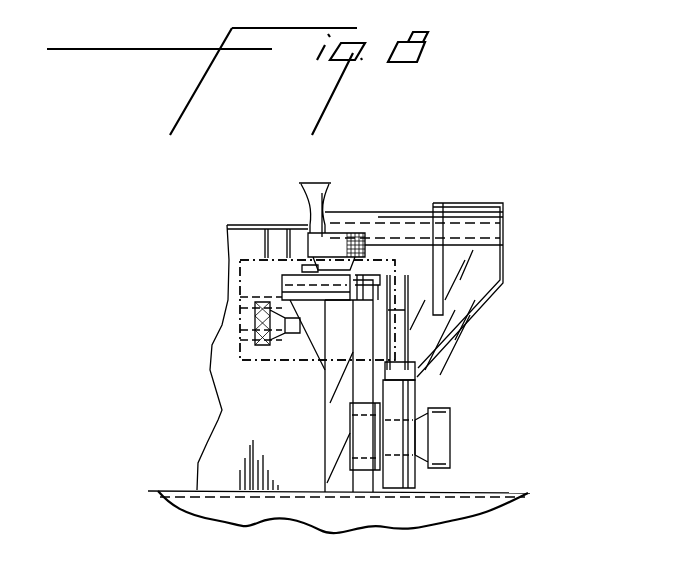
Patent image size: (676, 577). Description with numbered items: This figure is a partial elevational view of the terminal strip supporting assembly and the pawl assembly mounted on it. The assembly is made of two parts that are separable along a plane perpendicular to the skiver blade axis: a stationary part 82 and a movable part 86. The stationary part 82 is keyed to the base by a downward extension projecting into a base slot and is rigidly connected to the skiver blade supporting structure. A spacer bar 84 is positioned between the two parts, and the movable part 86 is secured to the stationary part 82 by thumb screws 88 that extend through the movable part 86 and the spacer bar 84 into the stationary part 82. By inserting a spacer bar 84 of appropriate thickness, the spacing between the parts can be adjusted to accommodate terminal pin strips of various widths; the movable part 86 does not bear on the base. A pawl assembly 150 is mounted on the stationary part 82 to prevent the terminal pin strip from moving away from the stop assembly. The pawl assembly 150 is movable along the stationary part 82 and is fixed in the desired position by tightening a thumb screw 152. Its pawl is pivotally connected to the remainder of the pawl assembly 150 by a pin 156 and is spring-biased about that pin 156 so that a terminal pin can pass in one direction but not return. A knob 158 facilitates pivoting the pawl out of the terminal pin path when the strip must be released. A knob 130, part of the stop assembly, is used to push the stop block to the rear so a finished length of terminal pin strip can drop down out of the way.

The knob 130 is at (312, 215).
The knob 158 is at (308, 245).
The pin 156 is at (300, 268).
The thumb screw 152 is at (255, 308).
The pawl assembly 150 is at (173, 355).
The stationary part 82 is at (332, 420).
The spacer bar 84 is at (357, 452).
The movable part 86 is at (412, 385).
The thumb screws 88 is at (440, 440).